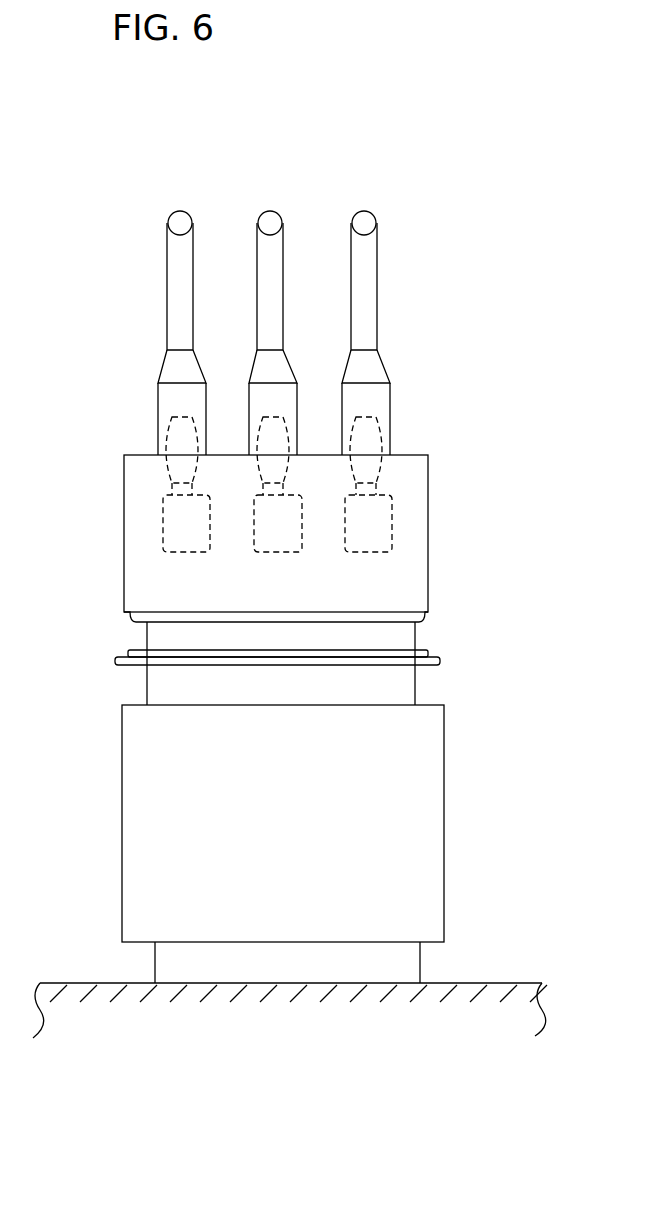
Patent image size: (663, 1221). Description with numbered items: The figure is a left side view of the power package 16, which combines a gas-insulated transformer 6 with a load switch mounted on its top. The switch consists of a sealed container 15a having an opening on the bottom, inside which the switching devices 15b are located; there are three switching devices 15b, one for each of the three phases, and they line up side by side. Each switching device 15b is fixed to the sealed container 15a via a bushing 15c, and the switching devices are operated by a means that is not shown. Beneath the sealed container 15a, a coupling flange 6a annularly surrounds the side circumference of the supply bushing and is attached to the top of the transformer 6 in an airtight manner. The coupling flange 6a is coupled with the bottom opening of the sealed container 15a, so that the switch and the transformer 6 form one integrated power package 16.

The transformer 6 is at (444, 802).
The coupling flange 6a is at (415, 632).
The sealed container 15a is at (427, 453).
The switching device 15b is at (392, 516).
The bushing 15c is at (373, 413).
The power package 16 is at (465, 315).